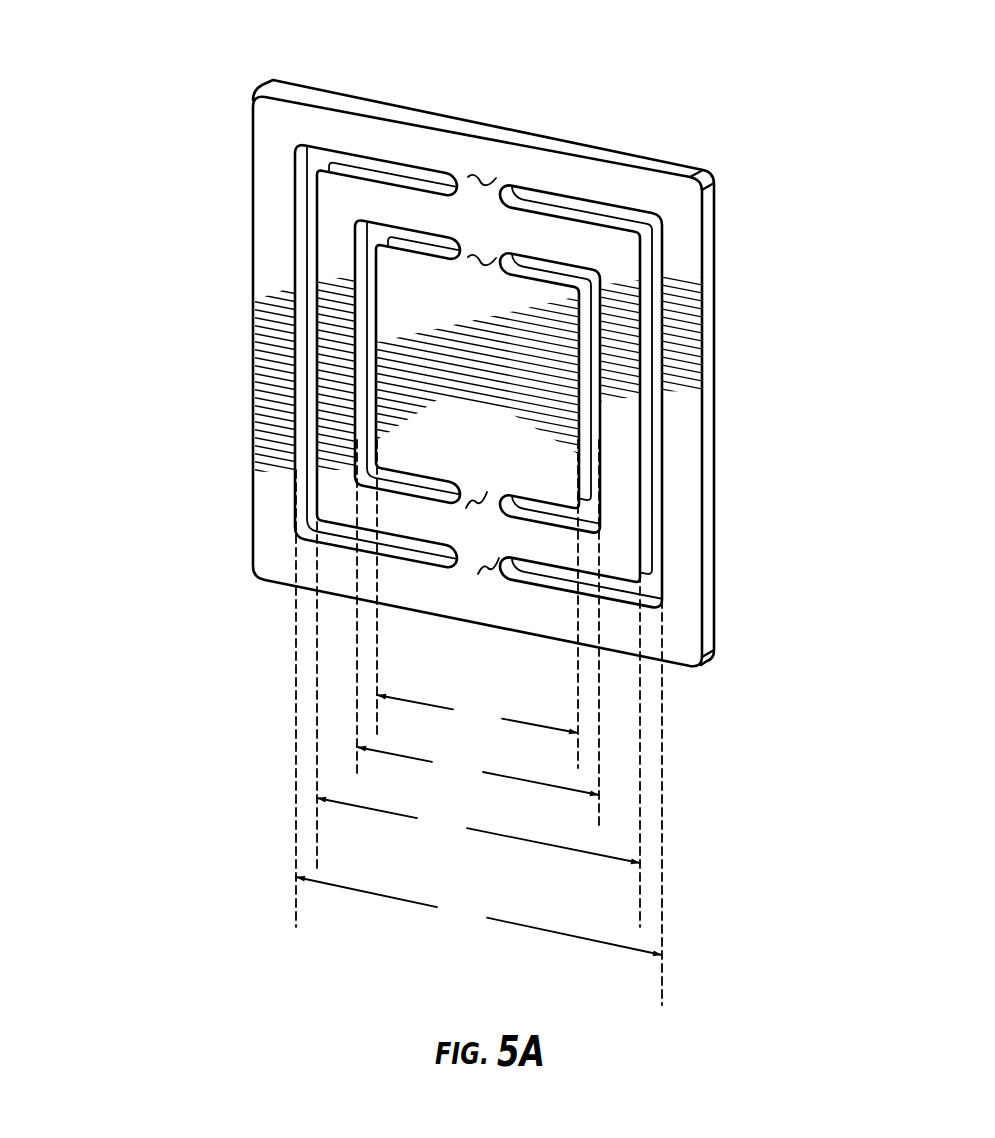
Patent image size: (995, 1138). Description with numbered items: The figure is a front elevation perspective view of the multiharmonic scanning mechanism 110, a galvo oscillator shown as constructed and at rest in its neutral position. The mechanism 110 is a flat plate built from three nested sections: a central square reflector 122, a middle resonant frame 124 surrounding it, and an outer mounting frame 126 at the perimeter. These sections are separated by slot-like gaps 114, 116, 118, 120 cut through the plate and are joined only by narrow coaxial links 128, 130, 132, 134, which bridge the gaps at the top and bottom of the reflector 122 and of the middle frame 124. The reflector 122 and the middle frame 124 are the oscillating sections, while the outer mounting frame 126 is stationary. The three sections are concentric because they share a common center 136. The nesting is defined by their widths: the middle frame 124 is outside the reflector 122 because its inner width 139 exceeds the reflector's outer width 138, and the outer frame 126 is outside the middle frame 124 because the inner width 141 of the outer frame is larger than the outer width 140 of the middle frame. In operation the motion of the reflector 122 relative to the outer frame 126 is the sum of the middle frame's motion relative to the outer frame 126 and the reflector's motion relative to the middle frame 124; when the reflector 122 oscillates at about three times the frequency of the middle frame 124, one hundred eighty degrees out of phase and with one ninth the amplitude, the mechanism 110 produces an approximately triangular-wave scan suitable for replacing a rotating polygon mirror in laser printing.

The multiharmonic scanning mechanism 110 is at (754, 159).
The first outer slot 114 is at (647, 528).
The inner slot 116 is at (664, 306).
The second outer slot 118 is at (307, 503).
The outer beam 120 is at (272, 296).
The central square reflector 122 is at (578, 327).
The middle resonant frame 124 is at (679, 392).
The outer mounting frame 126 is at (715, 387).
The narrow coaxial link 128 is at (482, 184).
The narrow coaxial link 130 is at (473, 262).
The narrow coaxial link 132 is at (462, 491).
The narrow coaxial link 134 is at (488, 575).
The common center 136 is at (483, 376).
The outer width of center square reflector 138 is at (477, 604).
The inner width of middle resonant frame 139 is at (478, 632).
The outer slot inner width 140 is at (478, 698).
The inner width of outer mounting frame 141 is at (479, 737).